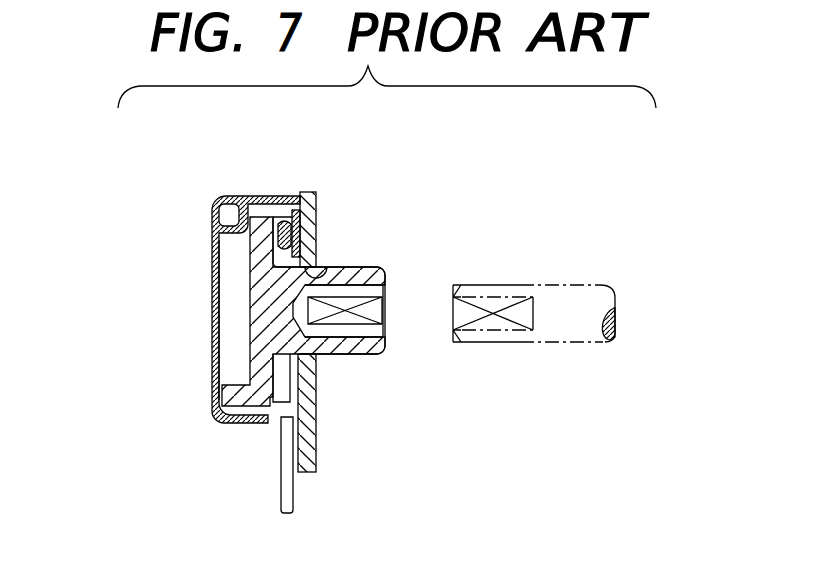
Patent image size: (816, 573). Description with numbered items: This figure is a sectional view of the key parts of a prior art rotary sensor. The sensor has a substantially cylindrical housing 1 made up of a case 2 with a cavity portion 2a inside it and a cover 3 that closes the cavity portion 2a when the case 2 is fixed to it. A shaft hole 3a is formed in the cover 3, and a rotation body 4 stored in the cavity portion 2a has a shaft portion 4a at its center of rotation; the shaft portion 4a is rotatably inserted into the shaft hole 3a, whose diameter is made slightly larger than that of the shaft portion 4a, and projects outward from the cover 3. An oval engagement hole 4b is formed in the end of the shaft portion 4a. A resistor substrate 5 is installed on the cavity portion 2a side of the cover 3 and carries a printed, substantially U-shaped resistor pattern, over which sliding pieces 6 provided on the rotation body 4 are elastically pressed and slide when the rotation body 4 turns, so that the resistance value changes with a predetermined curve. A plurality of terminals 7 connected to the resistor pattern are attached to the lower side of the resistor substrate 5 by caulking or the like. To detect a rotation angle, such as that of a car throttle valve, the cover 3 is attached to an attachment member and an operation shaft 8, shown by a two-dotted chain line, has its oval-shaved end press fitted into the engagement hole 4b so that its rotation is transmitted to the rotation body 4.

The housing 1 is at (204, 265).
The case 2 is at (276, 198).
The cavity portion 2a is at (232, 285).
The cover 3 is at (322, 215).
The shaft hole 3a is at (330, 267).
The rotation body 4 is at (307, 329).
The shaft portion 4a is at (370, 356).
The engagement hole 4b is at (383, 308).
The resistor substrate 5 is at (295, 212).
The sliding pieces 6 is at (282, 218).
The terminals 7 is at (278, 488).
The operation shaft 8 is at (557, 290).